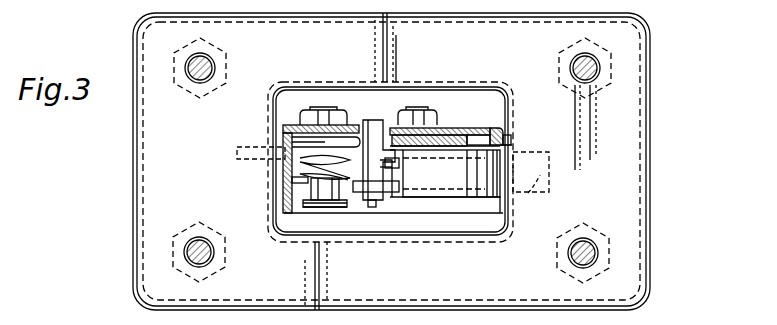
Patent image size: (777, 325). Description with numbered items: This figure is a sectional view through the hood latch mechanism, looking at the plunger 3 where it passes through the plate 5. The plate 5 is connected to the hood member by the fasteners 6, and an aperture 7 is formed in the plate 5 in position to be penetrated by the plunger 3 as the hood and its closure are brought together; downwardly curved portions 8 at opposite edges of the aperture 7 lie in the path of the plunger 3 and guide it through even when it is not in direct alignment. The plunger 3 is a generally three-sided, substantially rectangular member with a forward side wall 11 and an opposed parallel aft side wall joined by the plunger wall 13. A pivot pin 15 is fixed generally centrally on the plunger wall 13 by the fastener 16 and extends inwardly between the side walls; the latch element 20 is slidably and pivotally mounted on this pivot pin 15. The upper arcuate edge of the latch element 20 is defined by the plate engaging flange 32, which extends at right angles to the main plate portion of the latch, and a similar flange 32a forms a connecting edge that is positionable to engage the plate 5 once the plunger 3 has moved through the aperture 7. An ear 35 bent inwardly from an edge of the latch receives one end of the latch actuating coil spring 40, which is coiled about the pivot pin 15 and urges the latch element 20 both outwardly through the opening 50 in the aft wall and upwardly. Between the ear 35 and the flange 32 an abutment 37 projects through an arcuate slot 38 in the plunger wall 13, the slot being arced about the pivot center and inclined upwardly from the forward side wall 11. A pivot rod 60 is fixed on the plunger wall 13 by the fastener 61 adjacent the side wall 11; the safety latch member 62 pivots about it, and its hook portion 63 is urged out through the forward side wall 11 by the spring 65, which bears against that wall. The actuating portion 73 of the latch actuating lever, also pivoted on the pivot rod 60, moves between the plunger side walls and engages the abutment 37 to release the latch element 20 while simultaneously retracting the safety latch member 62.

The plunger 3 is at (482, 128).
The plate 5 is at (625, 173).
The fasteners 6 is at (186, 63).
The aperture 7 is at (452, 95).
The downwardly curved portions 8 is at (510, 118).
The forward side wall 11 is at (300, 198).
The plunger wall 13 is at (470, 128).
The pivot pin 15 is at (400, 193).
The fastener 16 is at (413, 110).
The latch element 20 is at (500, 133).
The plate engaging flange 32 is at (405, 196).
The flange 32a is at (531, 188).
The ear 35 is at (371, 208).
The abutment 37 is at (376, 121).
The arcuate slot 38 is at (357, 125).
The latch actuating coil spring 40 is at (397, 193).
The opening 50 is at (500, 147).
The pivot rod 60 is at (322, 203).
The fastener 61 is at (310, 110).
The safety latch member 62 is at (290, 138).
The hook portion 63 is at (236, 152).
The spring 65 is at (300, 176).
The actuating portion 73 is at (445, 140).